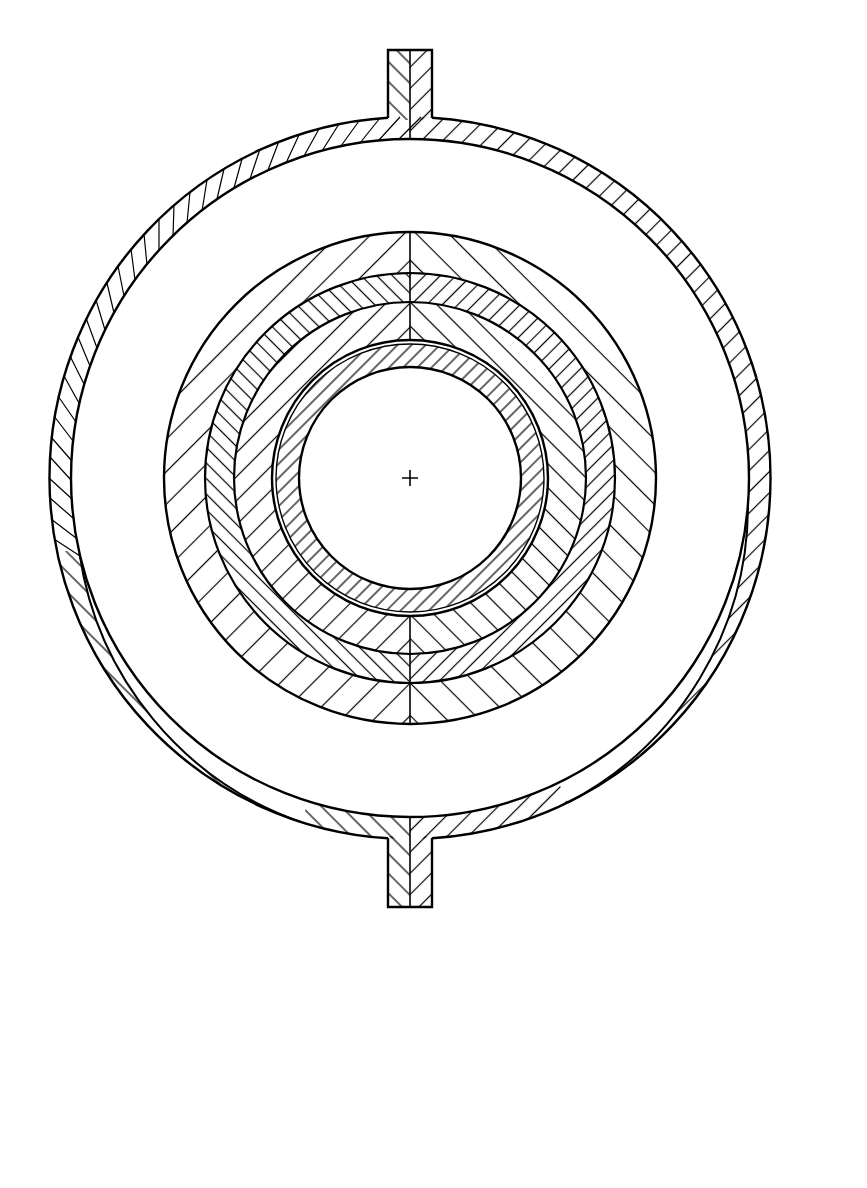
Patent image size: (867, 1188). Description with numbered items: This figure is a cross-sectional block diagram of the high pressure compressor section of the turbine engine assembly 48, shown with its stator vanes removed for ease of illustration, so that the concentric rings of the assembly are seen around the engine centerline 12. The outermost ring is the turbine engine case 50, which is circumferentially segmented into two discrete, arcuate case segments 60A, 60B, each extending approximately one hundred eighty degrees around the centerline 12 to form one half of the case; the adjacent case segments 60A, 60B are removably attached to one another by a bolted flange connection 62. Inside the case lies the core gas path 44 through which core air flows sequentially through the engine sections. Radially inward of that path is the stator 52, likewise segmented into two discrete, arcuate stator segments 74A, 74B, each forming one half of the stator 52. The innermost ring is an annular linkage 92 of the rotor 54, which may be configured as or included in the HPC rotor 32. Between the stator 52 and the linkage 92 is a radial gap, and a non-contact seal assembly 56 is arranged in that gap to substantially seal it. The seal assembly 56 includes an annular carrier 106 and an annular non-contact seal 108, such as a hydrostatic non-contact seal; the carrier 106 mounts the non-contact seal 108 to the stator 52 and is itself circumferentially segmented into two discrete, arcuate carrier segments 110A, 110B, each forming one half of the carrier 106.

The centerline 12 is at (411, 481).
The HPC rotor 32 is at (469, 389).
The core gas path 44 is at (427, 203).
The assembly 48 is at (640, 114).
The turbine engine case 50 is at (500, 118).
The stator 52 is at (628, 335).
The rotor 54 is at (410, 478).
The non-contact seal assembly 56 is at (628, 455).
The case segment 60A is at (235, 163).
The case segment 60B is at (640, 191).
The bolted flange connection 62 is at (442, 46).
The stator segment 74A is at (313, 251).
The stator segment 74B is at (520, 252).
The annular linkage 92 is at (325, 548).
The carrier 106 is at (606, 411).
The non-contact seal 108 is at (572, 508).
The carrier segment 110A is at (272, 320).
The carrier segment 110B is at (525, 310).